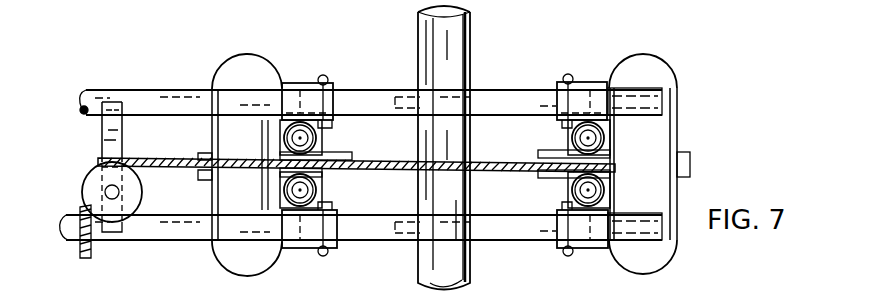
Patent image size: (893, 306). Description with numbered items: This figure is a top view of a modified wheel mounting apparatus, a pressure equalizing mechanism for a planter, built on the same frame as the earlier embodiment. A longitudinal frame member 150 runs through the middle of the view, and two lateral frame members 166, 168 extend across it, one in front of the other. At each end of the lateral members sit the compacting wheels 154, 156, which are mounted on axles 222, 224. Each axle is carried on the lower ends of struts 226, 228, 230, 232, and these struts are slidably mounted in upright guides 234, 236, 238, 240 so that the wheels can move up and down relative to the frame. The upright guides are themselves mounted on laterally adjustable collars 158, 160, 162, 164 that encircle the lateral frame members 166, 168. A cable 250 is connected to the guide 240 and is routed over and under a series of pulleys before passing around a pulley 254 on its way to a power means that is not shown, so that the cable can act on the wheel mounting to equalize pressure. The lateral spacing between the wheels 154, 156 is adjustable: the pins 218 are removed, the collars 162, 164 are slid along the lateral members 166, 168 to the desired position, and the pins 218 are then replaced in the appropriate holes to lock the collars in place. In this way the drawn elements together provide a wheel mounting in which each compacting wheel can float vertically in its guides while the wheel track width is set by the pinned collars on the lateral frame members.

The longitudinal frame member 150 is at (479, 284).
The compacting wheel 154 is at (226, 268).
The compacting wheel 156 is at (672, 72).
The laterally adjustable collar 158 is at (300, 84).
The laterally adjustable collar 160 is at (588, 83).
The laterally adjustable collar 162 is at (305, 250).
The laterally adjustable collar 164 is at (595, 250).
The lateral frame member 166 is at (140, 89).
The lateral frame member 168 is at (168, 242).
The pin 218 is at (326, 80).
The axle 222 is at (353, 157).
The axle 224 is at (538, 155).
The strut 226 is at (317, 140).
The strut 228 is at (606, 140).
The strut 230 is at (317, 190).
The strut 232 is at (606, 190).
The upright guide 234 is at (282, 142).
The upright guide 236 is at (572, 137).
The upright guide 238 is at (282, 190).
The upright guide 240 is at (575, 190).
The cable 250 is at (172, 148).
The pulley 254 is at (143, 190).